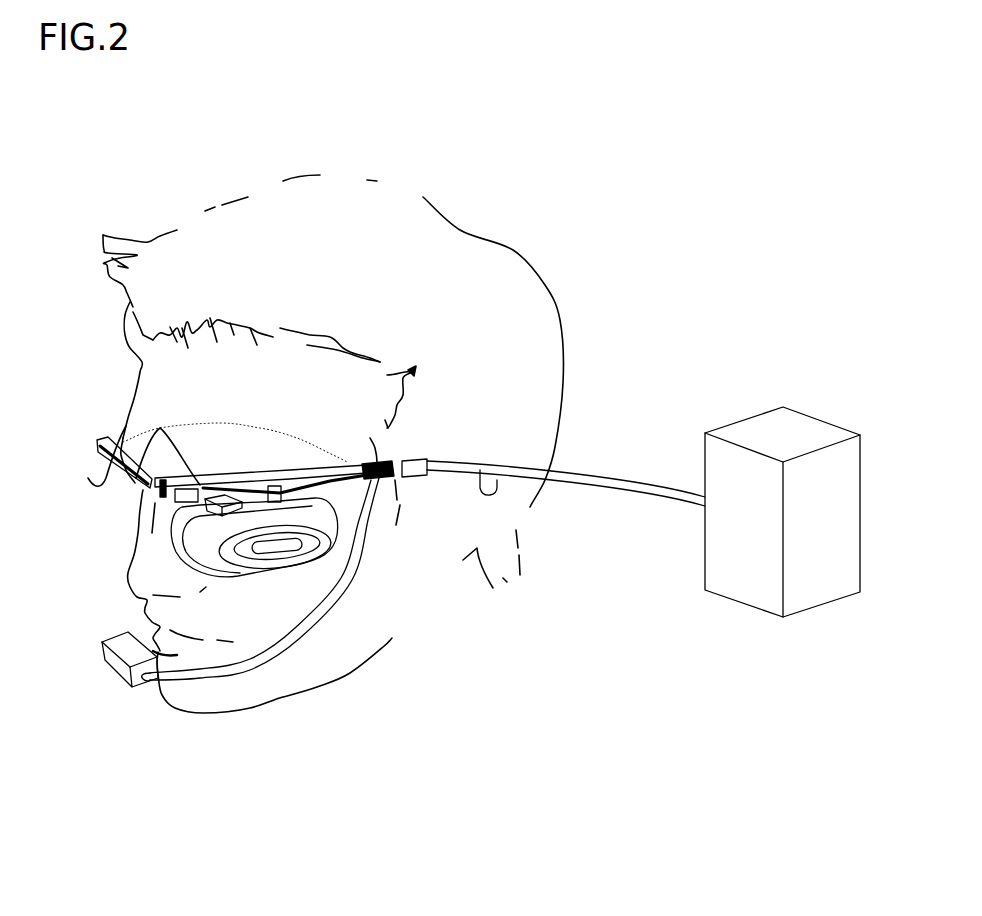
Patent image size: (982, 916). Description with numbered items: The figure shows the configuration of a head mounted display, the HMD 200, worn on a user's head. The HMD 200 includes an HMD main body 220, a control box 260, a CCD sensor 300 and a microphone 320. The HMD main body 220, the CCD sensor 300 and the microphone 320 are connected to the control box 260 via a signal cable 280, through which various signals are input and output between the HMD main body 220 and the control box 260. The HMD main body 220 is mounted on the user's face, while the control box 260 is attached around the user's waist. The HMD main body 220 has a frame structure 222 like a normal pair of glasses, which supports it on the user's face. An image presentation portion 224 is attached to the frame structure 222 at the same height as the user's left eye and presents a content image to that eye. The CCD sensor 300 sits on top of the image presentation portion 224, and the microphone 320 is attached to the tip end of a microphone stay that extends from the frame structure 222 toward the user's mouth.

The HMD 200 is at (688, 281).
The HMD main body 220 is at (98, 422).
The frame structure 222 is at (125, 462).
The image presentation portion 224 is at (255, 573).
The control box 260 is at (783, 405).
The signal cable 280 is at (660, 485).
The CCD sensor 300 is at (213, 493).
The microphone 320 is at (130, 690).